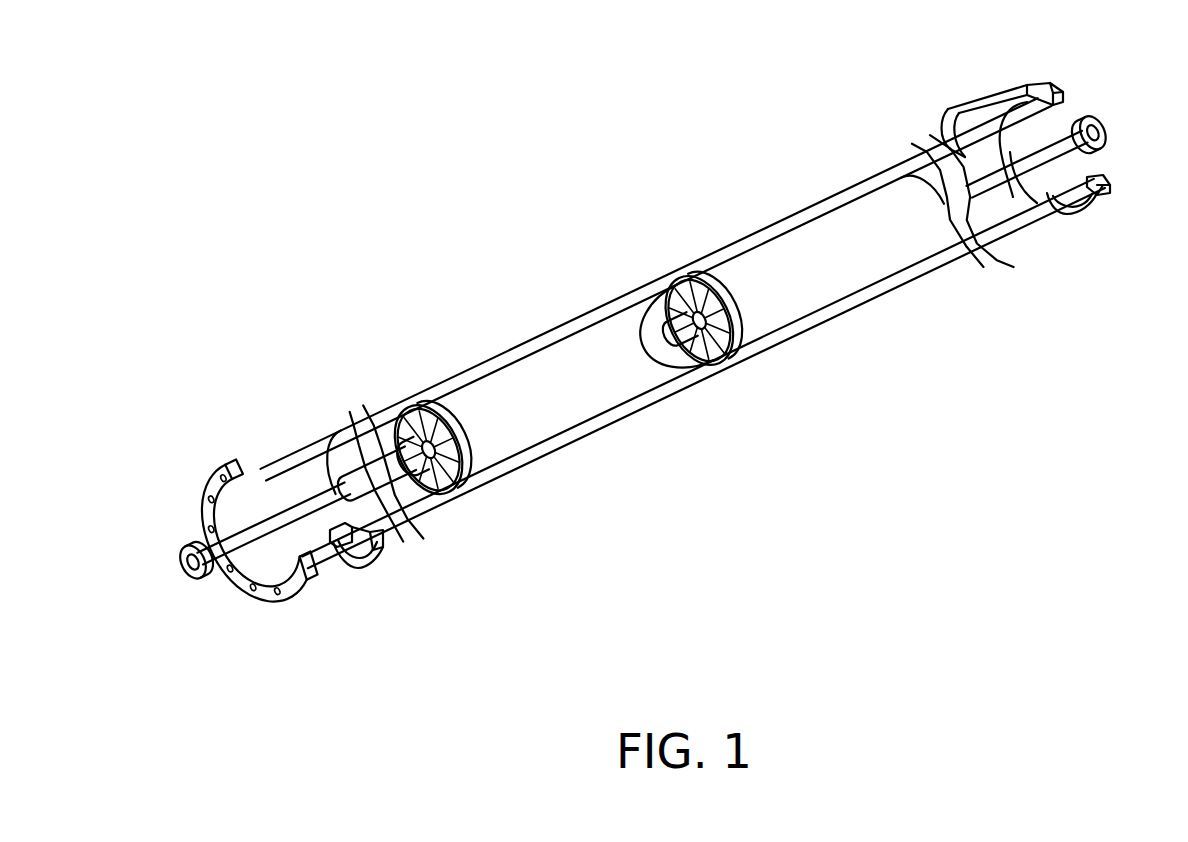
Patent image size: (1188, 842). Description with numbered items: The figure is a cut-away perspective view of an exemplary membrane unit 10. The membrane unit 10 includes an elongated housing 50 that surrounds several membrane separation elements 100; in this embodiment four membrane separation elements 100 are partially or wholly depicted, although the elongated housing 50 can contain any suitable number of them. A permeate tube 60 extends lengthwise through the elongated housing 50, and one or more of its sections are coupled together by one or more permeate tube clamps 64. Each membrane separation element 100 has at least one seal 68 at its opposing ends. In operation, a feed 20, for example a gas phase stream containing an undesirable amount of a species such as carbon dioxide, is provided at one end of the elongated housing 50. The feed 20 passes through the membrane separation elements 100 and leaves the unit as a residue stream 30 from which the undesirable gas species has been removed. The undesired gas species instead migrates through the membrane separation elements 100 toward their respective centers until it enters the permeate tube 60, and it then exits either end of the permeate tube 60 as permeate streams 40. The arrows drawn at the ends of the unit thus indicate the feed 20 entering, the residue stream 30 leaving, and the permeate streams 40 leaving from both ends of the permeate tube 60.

The membrane unit 10 is at (339, 298).
The feed 20 is at (408, 590).
The residue stream 30 is at (922, 78).
The permeate streams 40 is at (140, 598).
The elongated housing 50 is at (724, 256).
The permeate tube 60 is at (327, 498).
The permeate tube clamp 64 is at (668, 290).
The seal 68 is at (460, 470).
The membrane separation element 100 is at (333, 425).